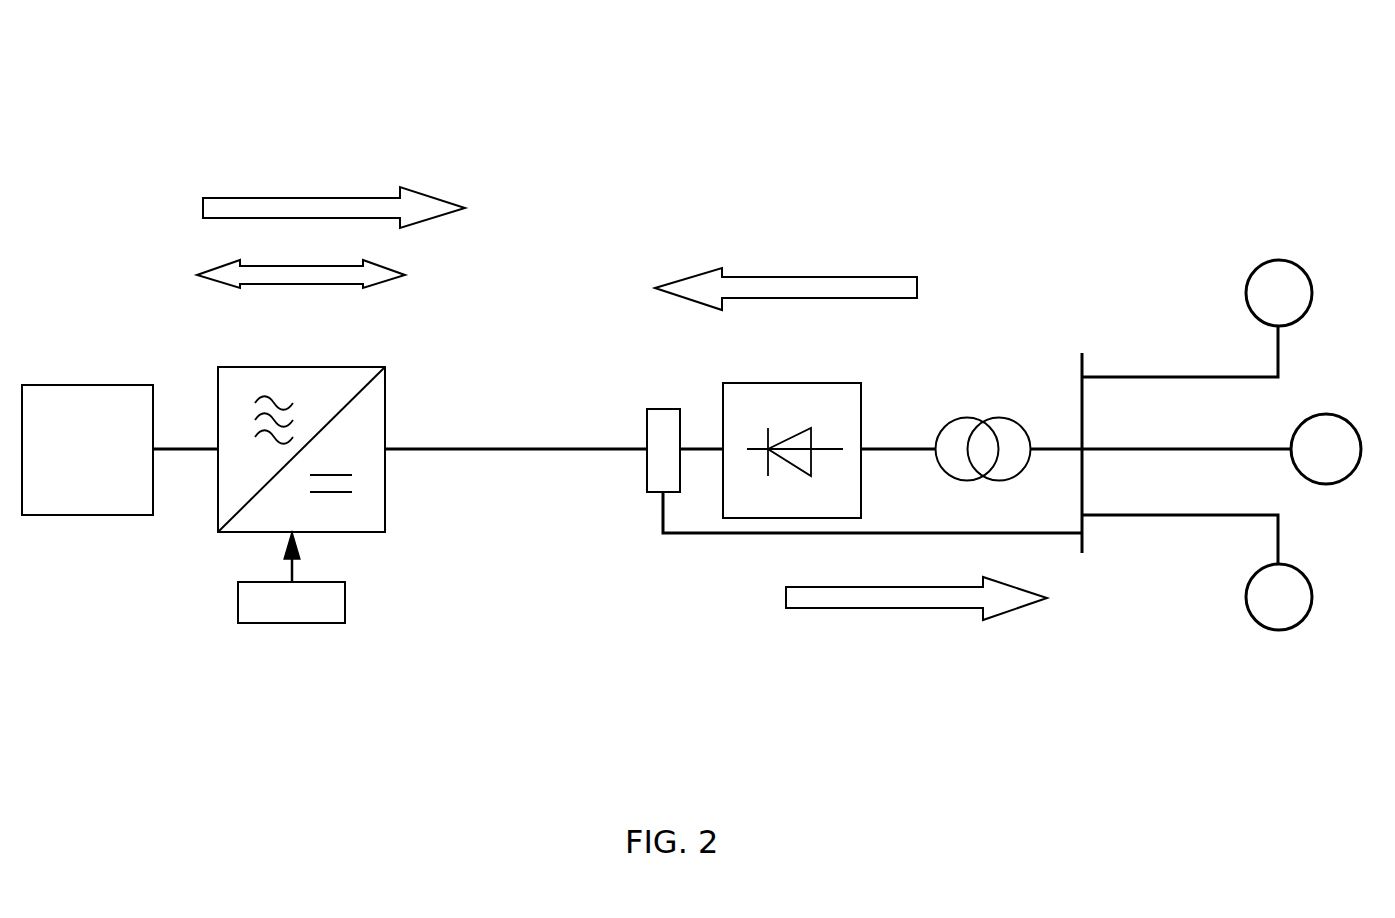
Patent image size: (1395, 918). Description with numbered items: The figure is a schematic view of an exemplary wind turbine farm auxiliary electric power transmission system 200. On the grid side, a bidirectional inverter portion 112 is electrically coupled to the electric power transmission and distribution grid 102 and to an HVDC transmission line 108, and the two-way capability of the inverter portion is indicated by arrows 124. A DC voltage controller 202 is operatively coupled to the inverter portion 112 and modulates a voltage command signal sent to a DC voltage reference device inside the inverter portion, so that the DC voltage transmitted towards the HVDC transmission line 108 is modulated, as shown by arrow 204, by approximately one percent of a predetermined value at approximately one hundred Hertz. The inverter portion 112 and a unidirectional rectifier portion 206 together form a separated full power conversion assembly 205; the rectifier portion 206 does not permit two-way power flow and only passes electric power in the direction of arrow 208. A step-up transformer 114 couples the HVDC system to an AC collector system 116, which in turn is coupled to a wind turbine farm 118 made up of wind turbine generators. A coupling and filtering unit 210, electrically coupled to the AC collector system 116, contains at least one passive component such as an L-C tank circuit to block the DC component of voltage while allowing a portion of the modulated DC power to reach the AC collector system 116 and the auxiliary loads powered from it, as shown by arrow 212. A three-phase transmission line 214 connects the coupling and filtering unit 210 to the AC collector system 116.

The electric power transmission and distribution grid 102 is at (106, 465).
The HVDC transmission line 108 is at (523, 448).
The inverter portion 112 is at (315, 367).
The step-up transformer 114 is at (987, 423).
The AC collector system 116 is at (1082, 357).
The wind turbine farm 118 is at (1162, 527).
The arrows 124 is at (318, 277).
The wind turbine farm auxiliary electric power transmission system 200 is at (435, 152).
The DC voltage controller 202 is at (340, 623).
The arrow 204 is at (323, 197).
The separated full power conversion assembly 205 is at (462, 385).
The unidirectional rectifier portion 206 is at (795, 383).
The arrow 208 is at (790, 277).
The coupling and filtering unit 210 is at (647, 467).
The arrow 212 is at (882, 607).
The three-phase transmission line 214 is at (755, 533).